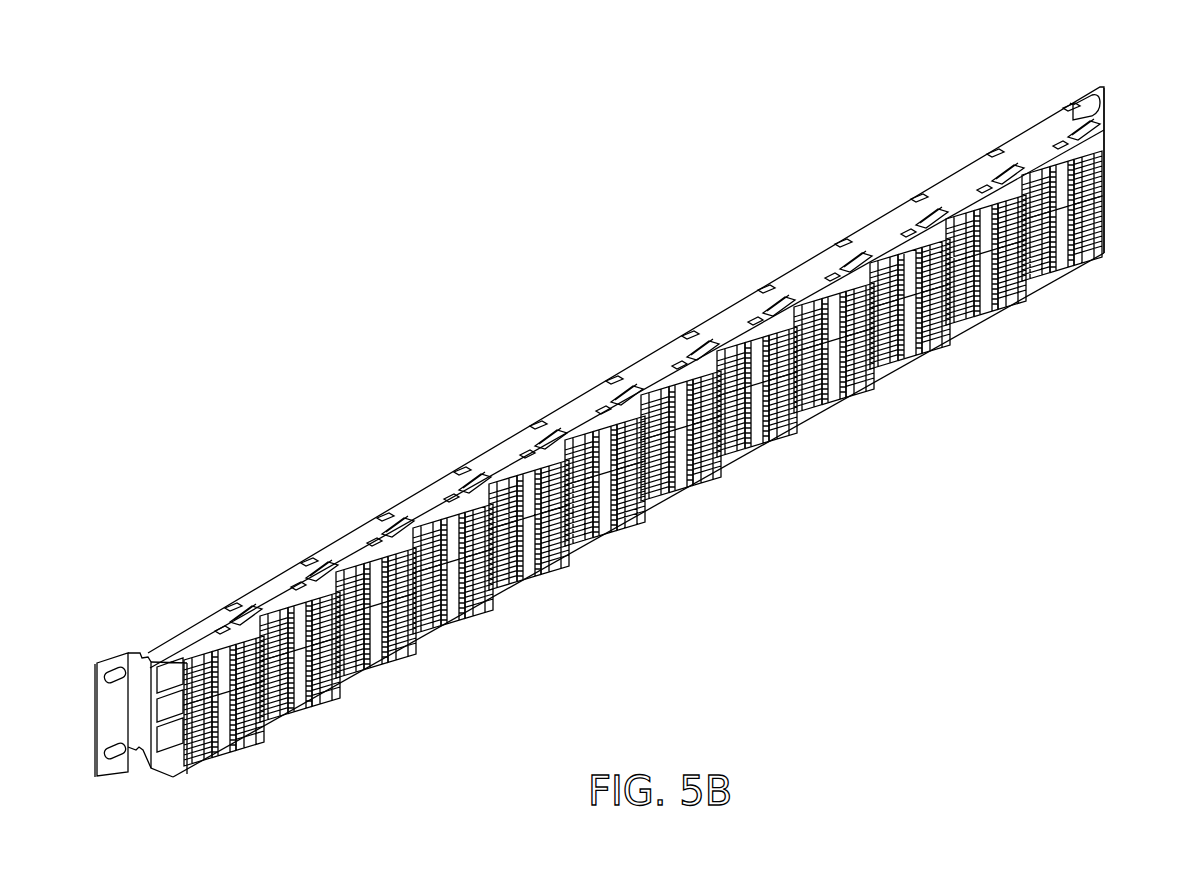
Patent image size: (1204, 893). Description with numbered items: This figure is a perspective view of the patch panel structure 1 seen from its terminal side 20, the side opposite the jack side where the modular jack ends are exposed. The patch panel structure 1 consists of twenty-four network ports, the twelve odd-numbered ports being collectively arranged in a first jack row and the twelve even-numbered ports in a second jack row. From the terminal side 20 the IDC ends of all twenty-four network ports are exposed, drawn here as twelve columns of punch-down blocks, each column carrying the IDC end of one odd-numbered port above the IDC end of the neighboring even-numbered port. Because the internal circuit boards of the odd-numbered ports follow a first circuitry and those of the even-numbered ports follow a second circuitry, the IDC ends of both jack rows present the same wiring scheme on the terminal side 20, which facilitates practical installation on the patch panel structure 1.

The patch panel structure 1 is at (180, 293).
The terminal side 20 is at (1122, 298).